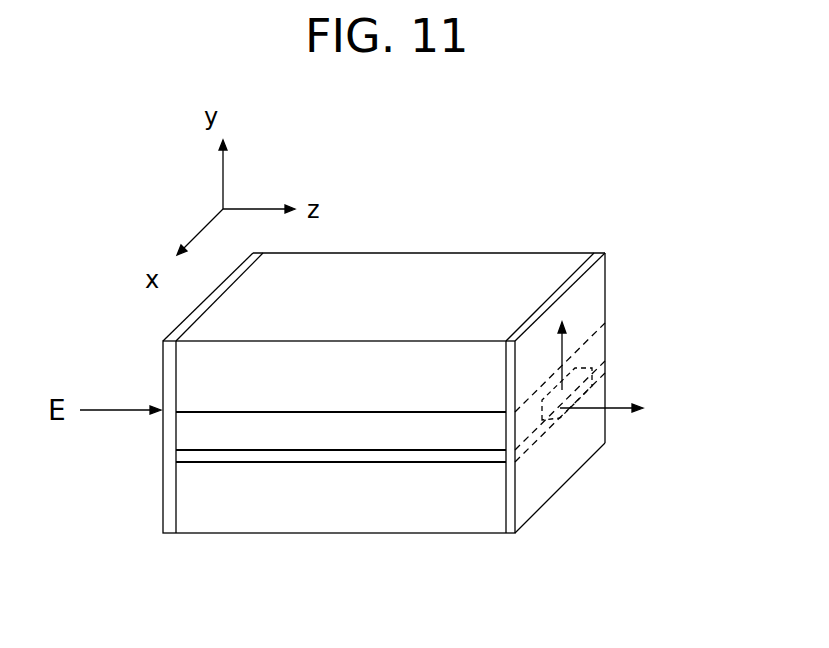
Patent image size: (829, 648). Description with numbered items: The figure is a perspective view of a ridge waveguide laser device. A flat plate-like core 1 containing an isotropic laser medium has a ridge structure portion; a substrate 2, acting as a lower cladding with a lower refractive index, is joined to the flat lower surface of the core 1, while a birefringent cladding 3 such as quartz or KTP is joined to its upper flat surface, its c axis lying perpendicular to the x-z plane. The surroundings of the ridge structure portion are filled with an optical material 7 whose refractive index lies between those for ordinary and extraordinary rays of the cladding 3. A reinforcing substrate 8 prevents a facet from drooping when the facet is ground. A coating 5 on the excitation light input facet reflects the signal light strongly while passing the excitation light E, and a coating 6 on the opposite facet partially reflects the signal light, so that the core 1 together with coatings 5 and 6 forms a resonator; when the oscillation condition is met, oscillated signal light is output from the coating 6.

The core 1 is at (444, 458).
The substrate 2 is at (270, 510).
The cladding 3 is at (590, 380).
The coating 5 is at (165, 460).
The coating 6 is at (509, 513).
The optical material 7 is at (340, 425).
The substrate 8 is at (463, 280).